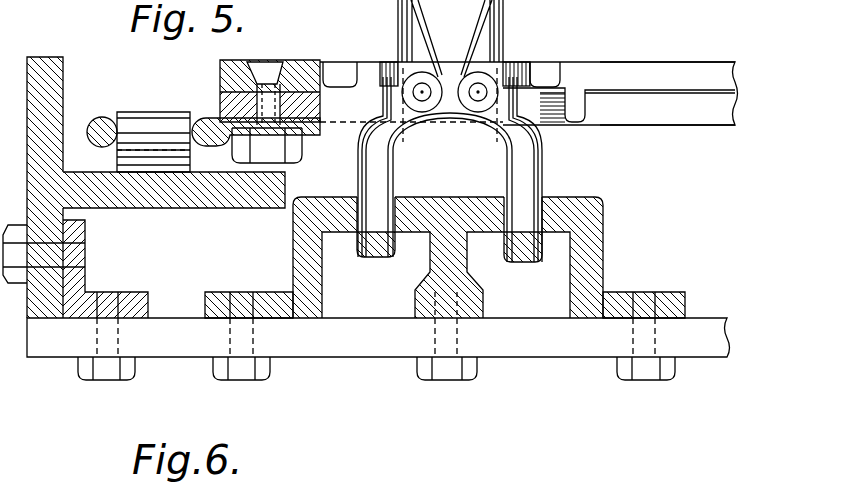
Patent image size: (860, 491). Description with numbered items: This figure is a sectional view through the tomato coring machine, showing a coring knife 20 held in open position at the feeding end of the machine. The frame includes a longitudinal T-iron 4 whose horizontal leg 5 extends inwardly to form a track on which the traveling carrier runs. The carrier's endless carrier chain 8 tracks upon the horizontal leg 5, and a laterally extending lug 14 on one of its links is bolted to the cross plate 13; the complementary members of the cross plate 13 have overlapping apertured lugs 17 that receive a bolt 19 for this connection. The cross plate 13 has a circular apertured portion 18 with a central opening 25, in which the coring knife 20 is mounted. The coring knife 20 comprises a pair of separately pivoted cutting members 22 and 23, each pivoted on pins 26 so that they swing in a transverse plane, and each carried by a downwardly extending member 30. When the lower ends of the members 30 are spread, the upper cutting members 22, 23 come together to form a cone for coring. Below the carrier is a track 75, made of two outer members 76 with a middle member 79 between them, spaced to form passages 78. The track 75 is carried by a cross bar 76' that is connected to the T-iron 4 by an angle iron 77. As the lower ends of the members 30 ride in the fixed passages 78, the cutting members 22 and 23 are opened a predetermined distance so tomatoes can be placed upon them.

The longitudinal T-iron 4 is at (56, 76).
The horizontal leg 5 is at (175, 200).
The endless carrier chain 8 is at (98, 127).
The cross plate 13 is at (700, 63).
The laterally extending lug 14 is at (216, 128).
The lug 17 is at (228, 98).
The apertured portion 18 is at (562, 67).
The bolt 19 is at (295, 60).
The coring knife 20 is at (452, 38).
The cutting member 22 is at (398, 3).
The cutting member 23 is at (504, 22).
The central opening 25 is at (378, 62).
The pin 26 is at (477, 96).
The downwardly extending member 30 is at (517, 168).
The track 75 is at (611, 225).
The outer member 76 is at (445, 282).
The cross bar 76' is at (378, 362).
The angle iron 77 is at (84, 283).
The passage 78 is at (543, 196).
The middle member 79 is at (424, 295).